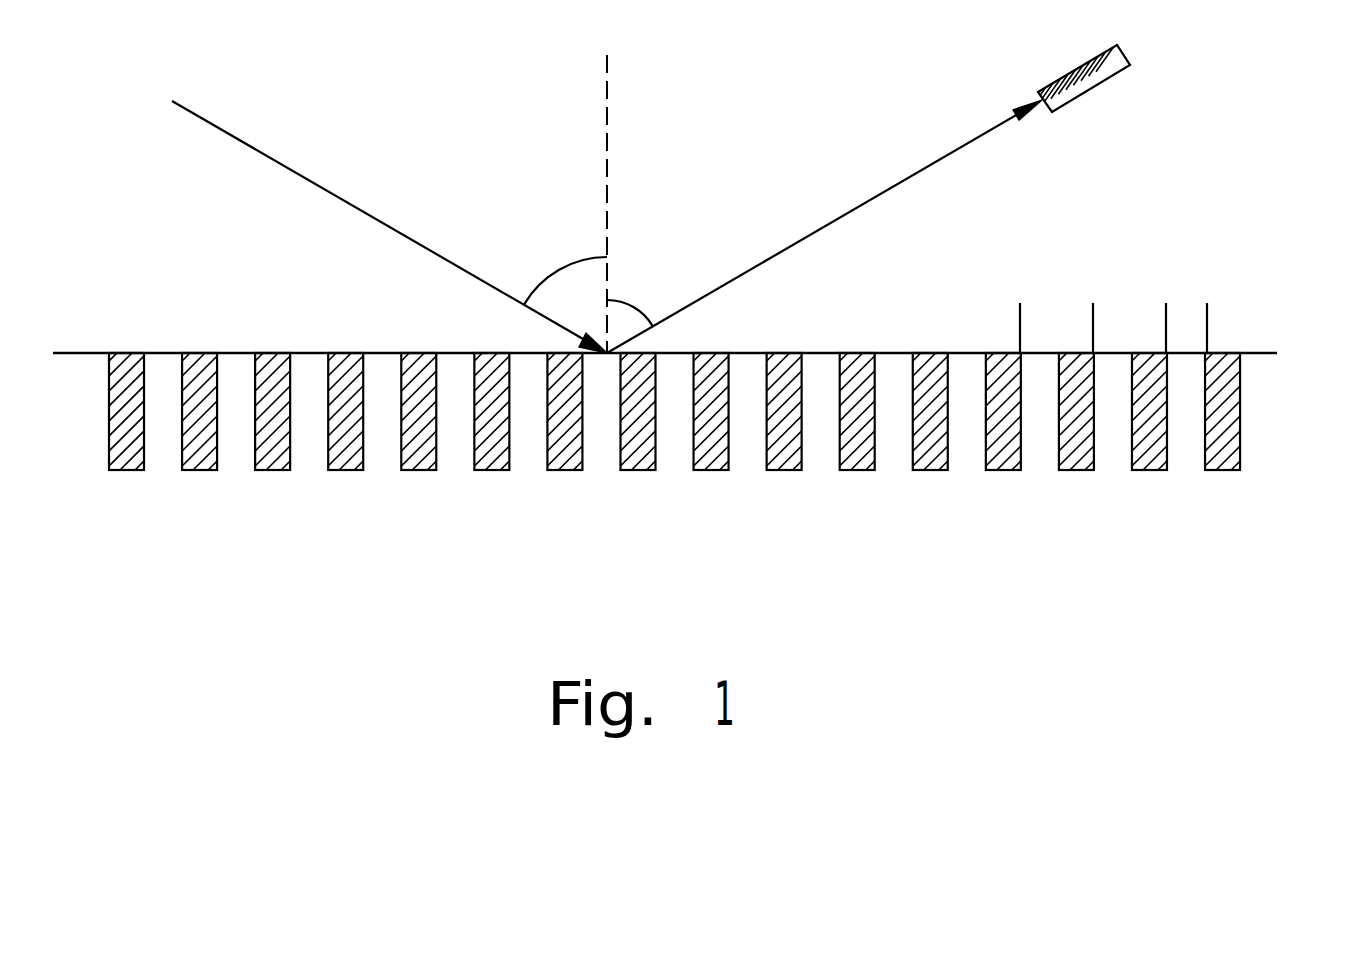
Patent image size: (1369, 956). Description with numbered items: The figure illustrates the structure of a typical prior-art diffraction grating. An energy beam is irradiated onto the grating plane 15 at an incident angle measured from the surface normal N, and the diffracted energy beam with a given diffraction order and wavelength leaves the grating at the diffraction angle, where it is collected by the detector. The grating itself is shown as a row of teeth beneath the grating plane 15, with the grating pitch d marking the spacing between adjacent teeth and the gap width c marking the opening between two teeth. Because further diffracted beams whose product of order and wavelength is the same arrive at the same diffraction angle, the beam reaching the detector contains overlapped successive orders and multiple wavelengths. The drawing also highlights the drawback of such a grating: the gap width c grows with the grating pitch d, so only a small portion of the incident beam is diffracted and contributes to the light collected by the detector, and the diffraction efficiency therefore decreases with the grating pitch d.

The grating plane 15 is at (1252, 353).
The surface normal N is at (607, 185).
The element detector is at (1112, 79).
The grating pitch d is at (1056, 315).
The gap width c is at (1186, 315).